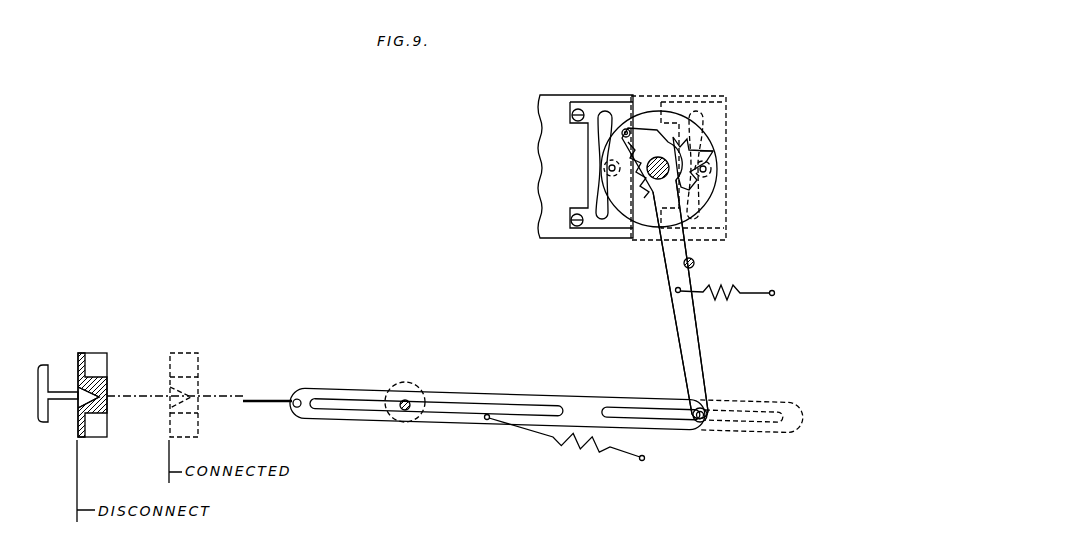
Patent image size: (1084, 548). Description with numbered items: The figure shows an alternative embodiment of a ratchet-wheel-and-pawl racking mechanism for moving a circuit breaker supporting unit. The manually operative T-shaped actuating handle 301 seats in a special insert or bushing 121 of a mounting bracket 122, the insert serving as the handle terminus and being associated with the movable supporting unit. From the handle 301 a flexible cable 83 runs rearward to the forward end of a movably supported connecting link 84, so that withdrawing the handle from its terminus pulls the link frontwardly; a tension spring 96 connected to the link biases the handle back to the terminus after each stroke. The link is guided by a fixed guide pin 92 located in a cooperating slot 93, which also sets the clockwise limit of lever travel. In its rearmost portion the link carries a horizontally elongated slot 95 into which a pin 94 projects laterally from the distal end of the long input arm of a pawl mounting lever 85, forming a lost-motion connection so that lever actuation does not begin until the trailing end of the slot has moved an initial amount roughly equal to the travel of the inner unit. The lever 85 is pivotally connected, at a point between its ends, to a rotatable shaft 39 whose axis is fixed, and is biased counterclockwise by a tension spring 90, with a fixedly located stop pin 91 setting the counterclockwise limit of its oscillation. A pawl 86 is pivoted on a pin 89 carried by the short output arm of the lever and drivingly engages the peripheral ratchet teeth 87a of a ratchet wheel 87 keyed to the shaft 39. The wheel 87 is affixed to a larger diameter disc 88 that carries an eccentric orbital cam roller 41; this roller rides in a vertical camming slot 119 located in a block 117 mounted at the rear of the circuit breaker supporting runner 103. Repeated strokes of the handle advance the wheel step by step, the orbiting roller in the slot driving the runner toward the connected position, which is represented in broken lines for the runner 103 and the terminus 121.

The actuating handle 301 is at (50, 365).
The mounting bracket 122 is at (98, 358).
The insert or bushing 121 is at (103, 385).
The flexible cable 83 is at (272, 406).
The connecting link 84 is at (458, 419).
The guide pin 92 is at (407, 398).
The slot 93 is at (524, 405).
The horizontally elongated slot 95 is at (640, 410).
The pin 94 is at (699, 424).
The tension spring 96 is at (572, 446).
The pawl mounting lever 85 is at (680, 322).
The tension spring 90 is at (722, 297).
The stop pin 91 is at (695, 264).
The circuit breaker supporting runner 103 is at (545, 177).
The block 117 is at (590, 229).
The vertical camming slot 119 is at (606, 112).
The pin 89 is at (622, 135).
The orbital cam roller 41 is at (608, 169).
The pawl 86 is at (643, 131).
The ratchet wheel 87 is at (674, 141).
The ratchet teeth 87a is at (713, 152).
The disc 88 is at (700, 197).
The shaft 39 is at (650, 196).